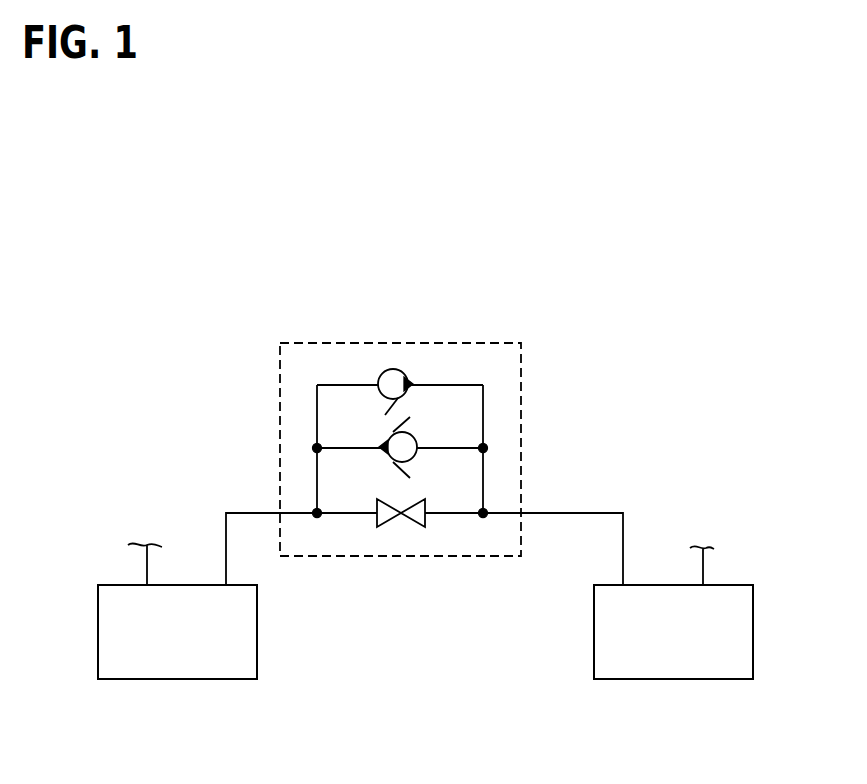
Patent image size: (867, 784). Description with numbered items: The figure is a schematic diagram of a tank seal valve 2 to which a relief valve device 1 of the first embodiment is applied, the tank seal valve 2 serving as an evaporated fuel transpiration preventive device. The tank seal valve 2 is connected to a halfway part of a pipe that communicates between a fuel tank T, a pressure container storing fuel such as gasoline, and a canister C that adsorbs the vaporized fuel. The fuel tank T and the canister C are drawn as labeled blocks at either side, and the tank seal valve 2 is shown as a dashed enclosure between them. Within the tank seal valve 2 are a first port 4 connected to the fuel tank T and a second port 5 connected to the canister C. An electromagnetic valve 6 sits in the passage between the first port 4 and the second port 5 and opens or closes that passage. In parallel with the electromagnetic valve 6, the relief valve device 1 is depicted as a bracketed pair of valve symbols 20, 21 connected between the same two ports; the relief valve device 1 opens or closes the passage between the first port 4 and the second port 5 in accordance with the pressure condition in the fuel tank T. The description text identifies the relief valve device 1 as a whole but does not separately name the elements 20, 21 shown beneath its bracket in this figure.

The relief valve device 1 is at (362, 253).
The tank seal valve 2 is at (524, 365).
The first port 4 is at (505, 512).
The second port 5 is at (338, 512).
The electromagnetic valve 6 is at (408, 520).
The first pump 20 is at (403, 375).
The second pump 21 is at (417, 432).
The canister C is at (178, 680).
The fuel tank T is at (678, 680).